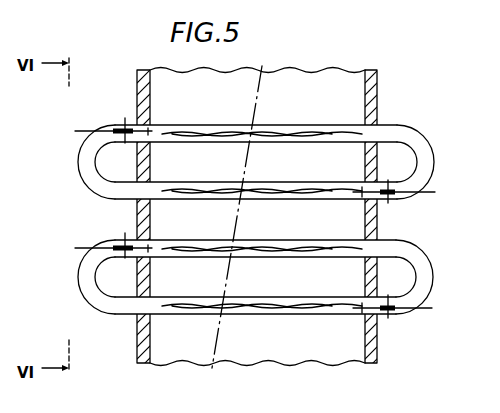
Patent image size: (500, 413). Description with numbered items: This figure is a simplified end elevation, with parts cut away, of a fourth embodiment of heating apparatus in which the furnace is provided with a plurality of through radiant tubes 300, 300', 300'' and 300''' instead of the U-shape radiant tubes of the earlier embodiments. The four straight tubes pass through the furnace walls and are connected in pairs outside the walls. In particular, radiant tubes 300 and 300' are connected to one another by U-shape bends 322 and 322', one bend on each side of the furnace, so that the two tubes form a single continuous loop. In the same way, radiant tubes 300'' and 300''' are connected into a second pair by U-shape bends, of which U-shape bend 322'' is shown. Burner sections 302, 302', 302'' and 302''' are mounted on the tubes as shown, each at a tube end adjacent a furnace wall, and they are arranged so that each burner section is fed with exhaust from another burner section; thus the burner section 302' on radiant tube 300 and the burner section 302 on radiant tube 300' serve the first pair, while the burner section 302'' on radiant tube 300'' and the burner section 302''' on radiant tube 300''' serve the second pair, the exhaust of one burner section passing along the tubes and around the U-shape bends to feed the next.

The through radiant tube 300 is at (256, 116).
The through radiant tube 300' is at (256, 174).
The through radiant tube 300'' is at (256, 231).
The through radiant tube 300''' is at (256, 289).
The burner section 302 is at (403, 206).
The burner section 302' is at (113, 112).
The burner section 302'' is at (113, 229).
The burner section 302''' is at (410, 324).
The U-shape bend 322 is at (435, 162).
The U-shape bend 322' is at (72, 162).
The U-shape bend 322'' is at (257, 279).